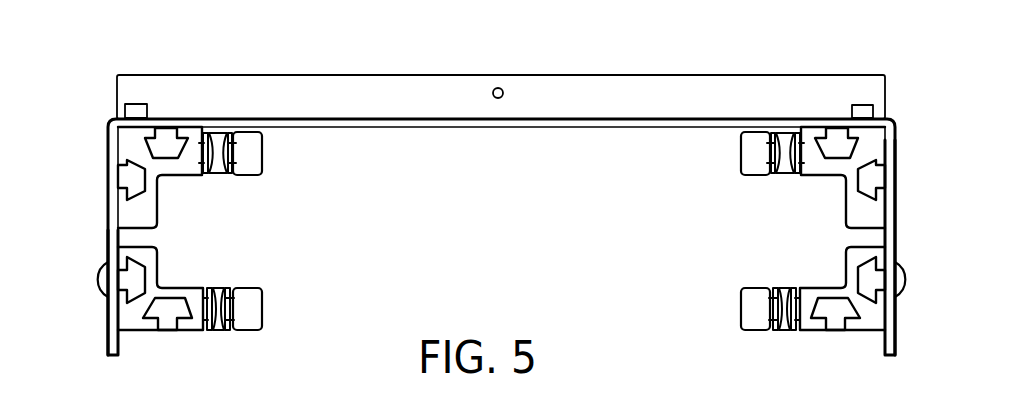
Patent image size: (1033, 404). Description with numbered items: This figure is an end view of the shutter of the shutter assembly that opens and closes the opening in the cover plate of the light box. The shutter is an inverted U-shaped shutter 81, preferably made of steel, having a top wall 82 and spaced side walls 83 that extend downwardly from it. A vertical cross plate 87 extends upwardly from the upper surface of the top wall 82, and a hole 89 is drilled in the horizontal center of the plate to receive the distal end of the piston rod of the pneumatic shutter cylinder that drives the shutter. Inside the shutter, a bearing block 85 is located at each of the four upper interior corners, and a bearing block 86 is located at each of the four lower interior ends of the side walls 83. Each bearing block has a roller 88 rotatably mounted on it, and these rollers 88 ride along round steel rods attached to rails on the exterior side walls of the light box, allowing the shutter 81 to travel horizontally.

The U-shaped shutter 81 is at (98, 160).
The top wall 82 is at (703, 122).
The side walls 83 is at (108, 336).
The bearing block 85 is at (262, 155).
The bearing block 86 is at (260, 310).
The vertical cross plate 87 is at (288, 97).
The rollers 88 is at (210, 287).
The hole 89 is at (503, 89).